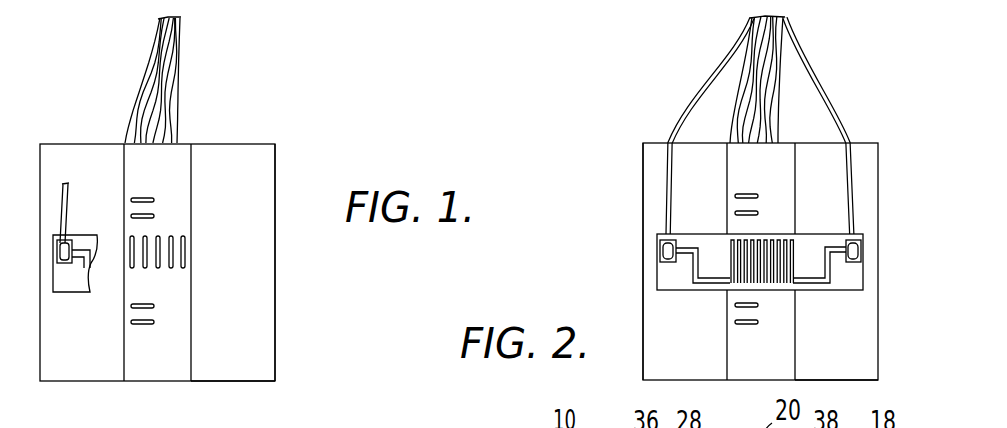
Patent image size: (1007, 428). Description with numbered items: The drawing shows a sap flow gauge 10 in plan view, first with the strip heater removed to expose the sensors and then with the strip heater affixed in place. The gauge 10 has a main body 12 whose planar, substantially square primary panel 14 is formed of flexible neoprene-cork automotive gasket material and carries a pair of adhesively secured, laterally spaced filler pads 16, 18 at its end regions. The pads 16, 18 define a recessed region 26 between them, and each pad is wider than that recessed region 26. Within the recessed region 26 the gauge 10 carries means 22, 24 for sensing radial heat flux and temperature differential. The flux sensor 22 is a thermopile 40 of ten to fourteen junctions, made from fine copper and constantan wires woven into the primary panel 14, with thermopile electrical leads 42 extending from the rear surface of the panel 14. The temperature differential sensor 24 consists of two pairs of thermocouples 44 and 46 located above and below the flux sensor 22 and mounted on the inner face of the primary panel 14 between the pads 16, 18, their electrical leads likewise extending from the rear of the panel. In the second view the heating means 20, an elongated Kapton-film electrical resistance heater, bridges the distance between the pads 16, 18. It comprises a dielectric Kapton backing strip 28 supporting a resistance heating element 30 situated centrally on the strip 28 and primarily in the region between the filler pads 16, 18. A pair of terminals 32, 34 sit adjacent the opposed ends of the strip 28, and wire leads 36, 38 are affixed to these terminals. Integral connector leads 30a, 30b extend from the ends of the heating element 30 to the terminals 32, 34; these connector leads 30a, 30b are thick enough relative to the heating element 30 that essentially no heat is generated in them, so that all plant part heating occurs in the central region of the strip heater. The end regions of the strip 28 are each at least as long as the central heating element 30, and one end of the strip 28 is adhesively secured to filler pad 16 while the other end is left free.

In FIG. 1, the sap flow gauge 10 is at (300, 163).
In FIG. 2, the sap flow gauge 10 is at (626, 172).
In FIG. 1, the main body 12 is at (280, 298).
In FIG. 2, the main body 12 is at (638, 234).
In FIG. 1, the primary panel 14 is at (156, 375).
In FIG. 2, the primary panel 14 is at (750, 372).
In FIG. 1, the filler pad 16 is at (62, 372).
In FIG. 2, the filler pad 16 is at (662, 356).
In FIG. 1, the filler pad 18 is at (262, 358).
In FIG. 2, the filler pad 18 is at (825, 372).
In FIG. 1, the heating means 20 is at (80, 303).
In FIG. 2, the heating means 20 is at (688, 232).
In FIG. 1, the flux sensor 22 is at (172, 231).
In FIG. 1, the temperature differential sensor 24 is at (172, 205).
In FIG. 2, the temperature differential sensor 24 is at (769, 184).
In FIG. 1, the recessed region 26 is at (176, 318).
In FIG. 2, the backing strip 28 is at (712, 292).
In FIG. 2, the resistance heating element 30 is at (780, 284).
In FIG. 2, the connector lead 30a is at (808, 290).
In FIG. 2, the connector lead 30b is at (690, 276).
In FIG. 1, the terminal 32 is at (73, 250).
In FIG. 2, the terminal 32 is at (660, 250).
In FIG. 2, the terminal 34 is at (845, 243).
In FIG. 1, the wire lead 36 is at (71, 195).
In FIG. 2, the wire lead 36 is at (690, 122).
In FIG. 2, the wire lead 38 is at (823, 103).
In FIG. 1, the thermopile 40 is at (185, 257).
In FIG. 1, the thermopile electrical leads 42 is at (181, 82).
In FIG. 2, the thermopile electrical leads 42 is at (789, 76).
In FIG. 1, the thermocouple pair 44 is at (134, 197).
In FIG. 1, the thermocouple pair 46 is at (140, 330).